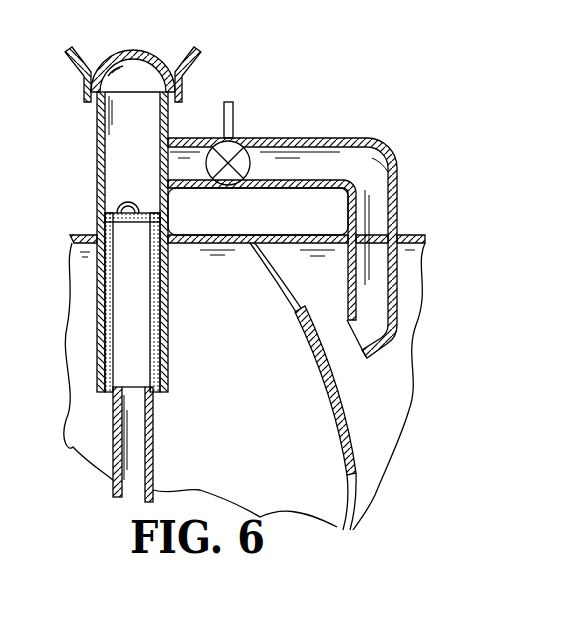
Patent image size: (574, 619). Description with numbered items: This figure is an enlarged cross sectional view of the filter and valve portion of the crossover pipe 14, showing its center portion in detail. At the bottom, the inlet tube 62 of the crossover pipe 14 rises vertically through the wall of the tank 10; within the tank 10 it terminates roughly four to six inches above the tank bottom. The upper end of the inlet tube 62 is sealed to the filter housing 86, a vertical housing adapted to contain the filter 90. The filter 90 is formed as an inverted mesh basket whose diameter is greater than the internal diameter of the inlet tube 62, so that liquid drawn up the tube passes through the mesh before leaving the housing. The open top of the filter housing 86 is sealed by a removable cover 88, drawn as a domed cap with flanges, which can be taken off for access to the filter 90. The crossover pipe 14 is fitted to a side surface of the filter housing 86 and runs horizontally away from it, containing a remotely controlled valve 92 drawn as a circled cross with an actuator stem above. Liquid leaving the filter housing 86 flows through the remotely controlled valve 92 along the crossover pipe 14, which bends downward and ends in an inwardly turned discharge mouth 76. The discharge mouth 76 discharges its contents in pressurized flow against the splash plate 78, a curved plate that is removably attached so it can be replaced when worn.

The tank 10 is at (296, 236).
The crossover pipe 14 is at (195, 139).
The inlet tube 62 is at (153, 442).
The discharge mouth 76 is at (346, 322).
The splash plate 78 is at (356, 384).
The filter housing 86 is at (97, 218).
The removable cover 88 is at (140, 55).
The filter 90 is at (153, 212).
The remotely controlled valve 92 is at (249, 140).